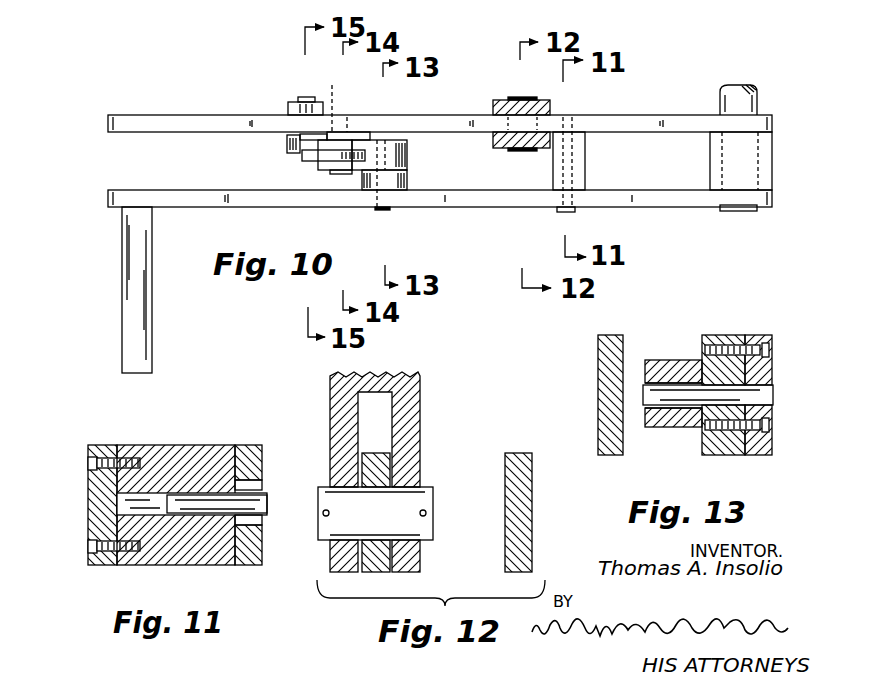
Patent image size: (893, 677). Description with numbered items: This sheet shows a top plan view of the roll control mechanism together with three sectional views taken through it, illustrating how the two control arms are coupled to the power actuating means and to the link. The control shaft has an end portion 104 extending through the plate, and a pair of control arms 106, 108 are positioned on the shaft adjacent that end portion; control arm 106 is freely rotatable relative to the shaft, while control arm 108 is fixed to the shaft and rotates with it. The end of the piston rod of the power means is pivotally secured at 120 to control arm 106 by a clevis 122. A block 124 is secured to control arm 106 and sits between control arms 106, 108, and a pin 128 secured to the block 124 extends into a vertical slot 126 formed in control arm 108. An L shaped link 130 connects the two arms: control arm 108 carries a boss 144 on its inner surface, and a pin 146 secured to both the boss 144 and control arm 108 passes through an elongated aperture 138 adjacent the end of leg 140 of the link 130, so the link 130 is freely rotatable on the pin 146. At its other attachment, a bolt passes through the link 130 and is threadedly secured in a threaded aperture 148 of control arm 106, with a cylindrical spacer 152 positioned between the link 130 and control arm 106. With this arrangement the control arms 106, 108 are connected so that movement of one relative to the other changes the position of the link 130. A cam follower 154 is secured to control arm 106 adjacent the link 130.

In FIG. 10, the end portion 104 is at (755, 210).
In FIG. 10, the control arm 106 is at (690, 99).
In FIG. 11, the control arm 106 is at (88, 500).
In FIG. 12, the control arm 106 is at (378, 452).
In FIG. 13, the control arm 106 is at (598, 398).
In FIG. 10, the control arm 108 is at (665, 200).
In FIG. 11, the control arm 108 is at (262, 452).
In FIG. 12, the control arm 108 is at (505, 538).
In FIG. 13, the control arm 108 is at (773, 368).
In FIG. 10, the pivotal connection 120 is at (522, 100).
In FIG. 12, the pivotal connection 120 is at (433, 497).
In FIG. 10, the clevis 122 is at (493, 103).
In FIG. 12, the clevis 122 is at (420, 400).
In FIG. 10, the block 124 is at (586, 164).
In FIG. 11, the block 124 is at (197, 445).
In FIG. 11, the vertical slot 126 is at (262, 485).
In FIG. 10, the pin 128 is at (566, 212).
In FIG. 11, the pin 128 is at (268, 505).
In FIG. 10, the L shaped link 130 is at (396, 140).
In FIG. 13, the L shaped link 130 is at (652, 429).
In FIG. 13, the elongated aperture 138 is at (650, 381).
In FIG. 13, the leg 140 is at (679, 360).
In FIG. 10, the boss 144 is at (407, 178).
In FIG. 13, the boss 144 is at (722, 335).
In FIG. 10, the pin 146 is at (385, 192).
In FIG. 13, the pin 146 is at (773, 395).
In FIG. 10, the threaded aperture 148 is at (321, 98).
In FIG. 10, the cylindrical spacer 152 is at (360, 128).
In FIG. 10, the cam follower 154 is at (286, 144).